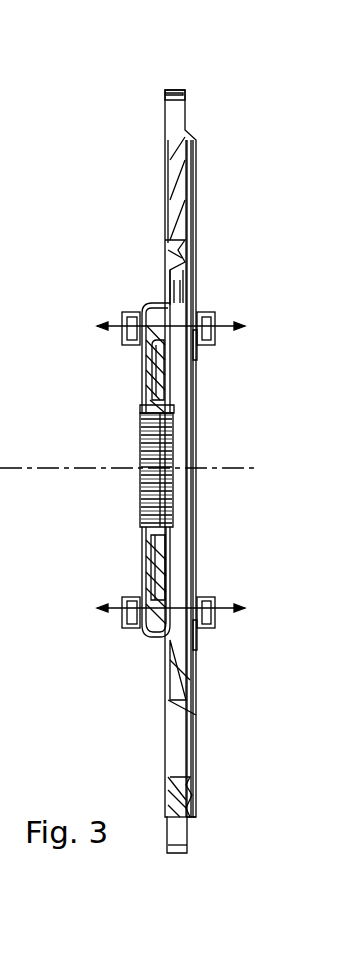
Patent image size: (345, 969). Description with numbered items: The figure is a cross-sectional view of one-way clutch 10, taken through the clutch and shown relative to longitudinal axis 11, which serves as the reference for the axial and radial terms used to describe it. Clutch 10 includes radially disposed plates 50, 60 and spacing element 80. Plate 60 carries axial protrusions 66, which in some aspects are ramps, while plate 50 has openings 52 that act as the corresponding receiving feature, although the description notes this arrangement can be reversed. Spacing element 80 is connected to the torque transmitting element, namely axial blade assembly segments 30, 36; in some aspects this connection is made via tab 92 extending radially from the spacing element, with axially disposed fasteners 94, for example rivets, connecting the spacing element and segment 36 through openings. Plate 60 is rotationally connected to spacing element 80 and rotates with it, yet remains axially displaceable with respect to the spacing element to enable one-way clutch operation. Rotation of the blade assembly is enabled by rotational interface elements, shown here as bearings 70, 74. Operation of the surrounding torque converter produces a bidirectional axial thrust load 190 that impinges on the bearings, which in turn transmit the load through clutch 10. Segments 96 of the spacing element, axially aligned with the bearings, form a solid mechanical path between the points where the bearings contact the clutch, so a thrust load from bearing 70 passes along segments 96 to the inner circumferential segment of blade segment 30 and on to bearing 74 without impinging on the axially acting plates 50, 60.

The one-way clutch 10 is at (260, 114).
The axial stator blade segment 30 is at (186, 115).
The axial blade assembly segment 36 is at (166, 120).
The fasteners 94 is at (166, 284).
The tab 92 is at (190, 272).
The bearing 70 is at (126, 312).
The bearing 74 is at (212, 312).
The bidirectional axial thrust load 190 is at (222, 330).
The plate 60 is at (157, 365).
The spacing element 80 is at (148, 393).
The segment 96 is at (193, 345).
The plate 50 is at (178, 403).
The longitudinal axis 11 is at (253, 465).
The protrusions 66 is at (156, 570).
The openings 52 is at (176, 577).